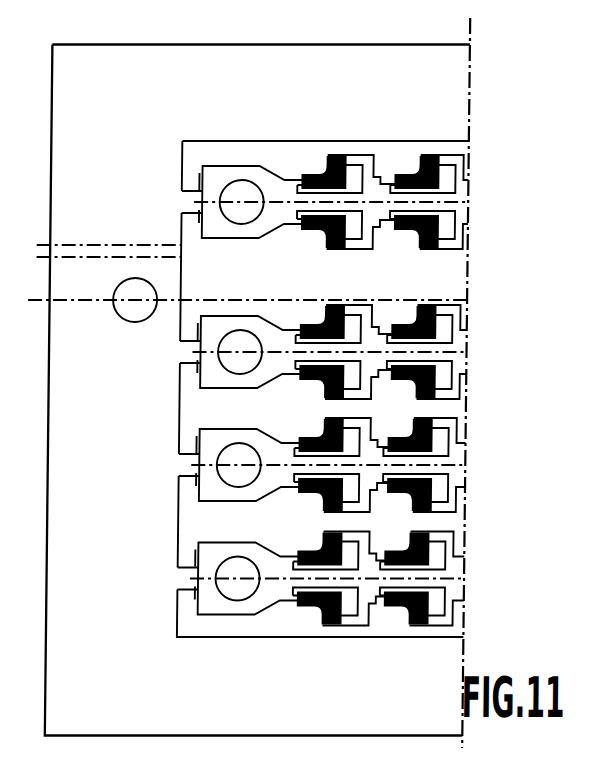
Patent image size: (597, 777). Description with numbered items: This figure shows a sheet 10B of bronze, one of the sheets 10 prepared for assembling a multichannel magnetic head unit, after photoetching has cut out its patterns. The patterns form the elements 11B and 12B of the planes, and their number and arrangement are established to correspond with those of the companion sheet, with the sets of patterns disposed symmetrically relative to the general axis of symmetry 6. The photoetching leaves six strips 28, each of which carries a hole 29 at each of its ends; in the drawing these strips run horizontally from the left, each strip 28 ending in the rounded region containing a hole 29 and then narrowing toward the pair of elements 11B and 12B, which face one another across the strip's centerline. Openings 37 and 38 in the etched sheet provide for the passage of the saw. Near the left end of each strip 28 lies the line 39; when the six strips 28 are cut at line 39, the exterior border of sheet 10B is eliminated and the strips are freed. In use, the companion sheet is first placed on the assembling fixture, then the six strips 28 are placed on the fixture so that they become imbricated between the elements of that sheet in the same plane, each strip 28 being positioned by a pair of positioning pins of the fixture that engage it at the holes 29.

The general axis of symmetry 6 is at (35, 300).
The sheet 10 is at (234, 435).
The sheet of bronze 10B is at (48, 550).
The element 11B is at (399, 435).
The element 12B is at (421, 508).
The strip 28 is at (266, 316).
The hole 29 is at (227, 556).
The opening 37 is at (453, 343).
The opening 38 is at (445, 480).
The line 39 is at (198, 322).